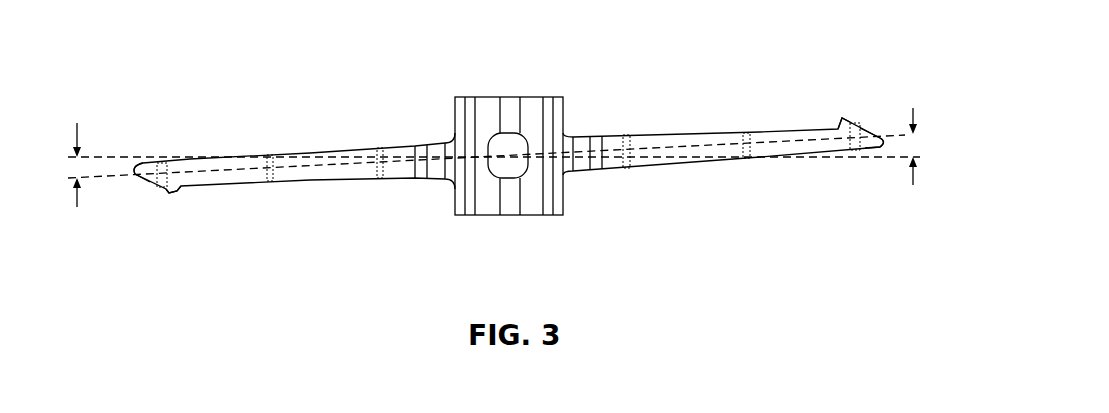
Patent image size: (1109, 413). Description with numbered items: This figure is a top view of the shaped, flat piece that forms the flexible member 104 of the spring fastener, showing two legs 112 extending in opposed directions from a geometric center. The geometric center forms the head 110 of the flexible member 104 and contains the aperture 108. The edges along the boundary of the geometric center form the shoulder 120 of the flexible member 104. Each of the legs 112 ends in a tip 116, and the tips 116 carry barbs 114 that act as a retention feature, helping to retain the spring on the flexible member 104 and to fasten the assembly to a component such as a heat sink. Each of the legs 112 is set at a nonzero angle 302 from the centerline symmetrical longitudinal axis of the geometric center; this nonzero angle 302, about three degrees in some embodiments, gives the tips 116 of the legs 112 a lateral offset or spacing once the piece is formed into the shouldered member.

The flexible member 104 is at (620, 54).
The aperture 108 is at (512, 132).
The head 110 is at (510, 215).
The legs 112 is at (358, 181).
The barbs 114 is at (180, 190).
The tips 116 is at (167, 191).
The shoulder 120 is at (454, 128).
The nonzero angle 302 is at (77, 142).